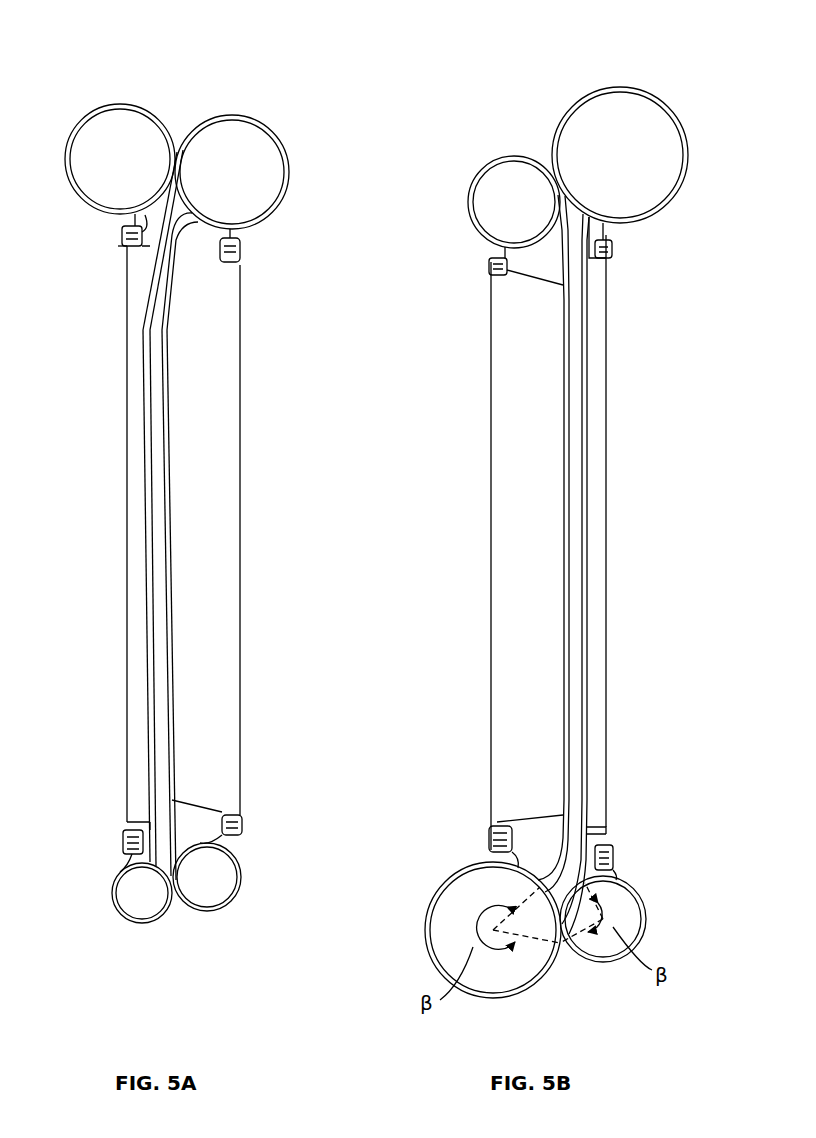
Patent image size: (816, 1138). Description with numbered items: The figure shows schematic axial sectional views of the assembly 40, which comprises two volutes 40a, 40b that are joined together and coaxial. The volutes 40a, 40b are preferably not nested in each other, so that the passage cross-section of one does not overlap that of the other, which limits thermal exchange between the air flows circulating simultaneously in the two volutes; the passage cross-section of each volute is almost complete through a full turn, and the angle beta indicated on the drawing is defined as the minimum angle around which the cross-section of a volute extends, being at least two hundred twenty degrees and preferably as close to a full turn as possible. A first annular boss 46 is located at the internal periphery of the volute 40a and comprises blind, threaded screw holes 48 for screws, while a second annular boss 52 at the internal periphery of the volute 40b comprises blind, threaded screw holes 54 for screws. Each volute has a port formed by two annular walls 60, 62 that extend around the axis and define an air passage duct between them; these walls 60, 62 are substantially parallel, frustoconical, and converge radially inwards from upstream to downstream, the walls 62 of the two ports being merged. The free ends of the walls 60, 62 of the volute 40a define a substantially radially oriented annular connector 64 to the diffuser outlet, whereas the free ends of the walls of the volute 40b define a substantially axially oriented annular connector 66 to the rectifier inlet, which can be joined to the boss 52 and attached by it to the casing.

In FIG. 5A, the assembly 40 is at (286, 107).
In FIG. 5B, the assembly 40 is at (710, 99).
In FIG. 5A, the volute 40a is at (221, 114).
In FIG. 5B, the volute 40a is at (500, 158).
In FIG. 5A, the volute 40b is at (106, 104).
In FIG. 5B, the volute 40b is at (628, 88).
In FIG. 5A, the first annular boss 46 is at (240, 266).
In FIG. 5B, the first annular boss 46 is at (490, 285).
In FIG. 5A, the screw holes 48 is at (242, 249).
In FIG. 5B, the screw holes 48 is at (490, 265).
In FIG. 5A, the second annular boss 52 is at (125, 246).
In FIG. 5B, the second annular boss 52 is at (613, 248).
In FIG. 5A, the screw holes 54 is at (122, 232).
In FIG. 5B, the screw holes 54 is at (611, 853).
In FIG. 5A, the annular wall 60 is at (140, 228).
In FIG. 5A, the annular wall 62 is at (163, 207).
In FIG. 5A, the connector 64 is at (167, 297).
In FIG. 5B, the connector 64 is at (588, 790).
In FIG. 5A, the connector 66 is at (130, 818).
In FIG. 5B, the connector 66 is at (606, 828).